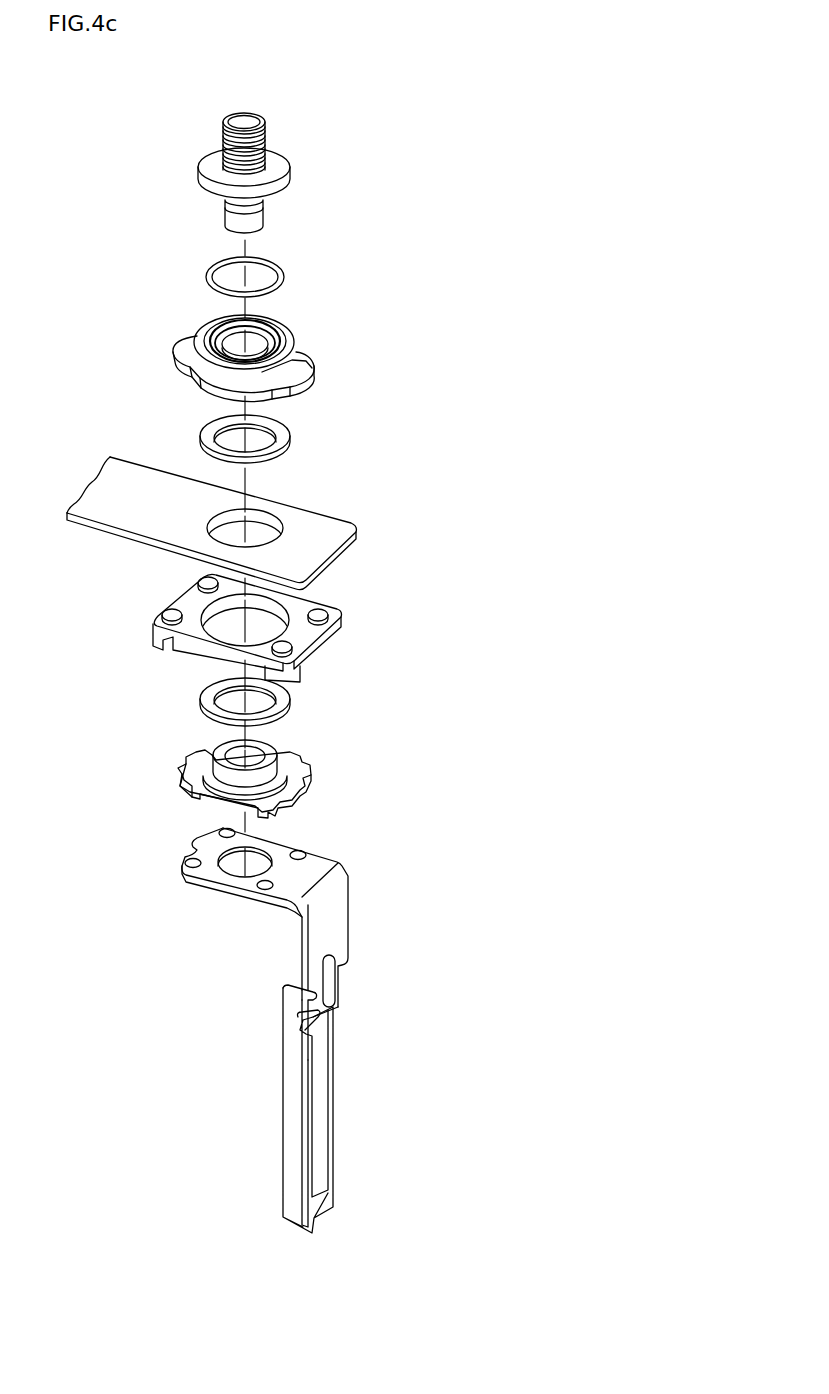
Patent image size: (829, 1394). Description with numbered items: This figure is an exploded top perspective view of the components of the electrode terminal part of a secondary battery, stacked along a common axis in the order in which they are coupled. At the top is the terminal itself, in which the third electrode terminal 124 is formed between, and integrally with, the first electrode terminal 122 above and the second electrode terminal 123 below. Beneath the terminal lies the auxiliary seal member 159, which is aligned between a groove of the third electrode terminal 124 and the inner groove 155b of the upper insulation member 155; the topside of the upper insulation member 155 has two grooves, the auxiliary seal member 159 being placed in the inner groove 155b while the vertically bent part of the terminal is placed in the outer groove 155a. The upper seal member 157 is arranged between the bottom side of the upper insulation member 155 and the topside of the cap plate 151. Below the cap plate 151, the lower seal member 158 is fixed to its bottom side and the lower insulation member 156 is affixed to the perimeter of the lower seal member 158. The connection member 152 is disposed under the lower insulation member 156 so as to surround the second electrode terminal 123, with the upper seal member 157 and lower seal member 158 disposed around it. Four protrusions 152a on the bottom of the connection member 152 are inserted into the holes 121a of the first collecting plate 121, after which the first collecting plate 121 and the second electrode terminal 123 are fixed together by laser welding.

The first collecting plate 121 is at (312, 863).
The holes 121a is at (184, 862).
The first electrode terminal 122 is at (262, 131).
The second electrode terminal 123 is at (262, 222).
The third electrode terminal 124 is at (279, 164).
The cap plate 151 is at (323, 533).
The connection member 152 is at (297, 764).
The protrusions 152a is at (187, 797).
The upper insulation member 155 is at (284, 331).
The groove 155a is at (272, 330).
The groove 155b is at (292, 333).
The lower insulation member 156 is at (303, 632).
The upper seal member 157 is at (286, 437).
The lower seal member 158 is at (204, 700).
The auxiliary seal member 159 is at (208, 273).